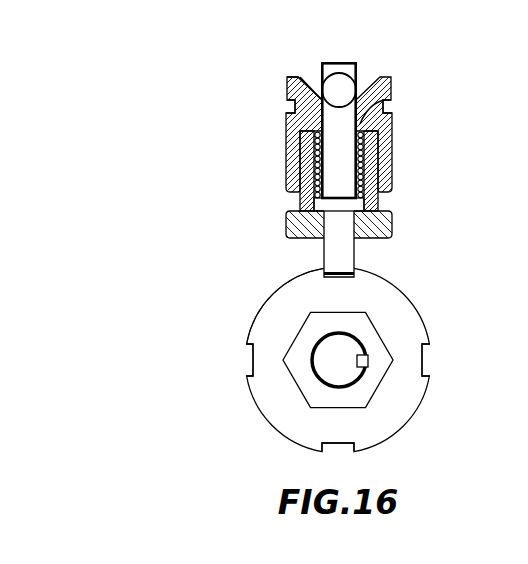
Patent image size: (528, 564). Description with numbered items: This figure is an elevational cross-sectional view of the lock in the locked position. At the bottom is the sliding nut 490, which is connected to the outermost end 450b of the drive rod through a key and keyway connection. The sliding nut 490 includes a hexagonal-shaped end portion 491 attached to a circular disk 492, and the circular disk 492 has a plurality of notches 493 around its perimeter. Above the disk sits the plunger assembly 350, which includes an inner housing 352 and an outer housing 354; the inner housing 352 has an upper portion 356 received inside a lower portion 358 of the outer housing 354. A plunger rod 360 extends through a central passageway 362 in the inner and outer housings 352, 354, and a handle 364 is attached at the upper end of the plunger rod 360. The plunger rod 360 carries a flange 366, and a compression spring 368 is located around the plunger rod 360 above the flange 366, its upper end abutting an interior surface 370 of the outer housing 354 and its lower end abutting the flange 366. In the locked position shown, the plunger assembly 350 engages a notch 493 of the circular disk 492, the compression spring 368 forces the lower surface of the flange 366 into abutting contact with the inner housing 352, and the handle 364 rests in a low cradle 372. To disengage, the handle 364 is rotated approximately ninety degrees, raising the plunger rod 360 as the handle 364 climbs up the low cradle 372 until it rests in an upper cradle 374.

The plunger assembly 350 is at (190, 86).
The inner housing 352 is at (393, 217).
The outer housing 354 is at (392, 137).
The upper portion 356 is at (305, 143).
The lower portion 358 is at (290, 170).
The plunger rod 360 is at (352, 62).
The central passageway 362 is at (300, 107).
The handle 364 is at (349, 85).
The flange 366 is at (322, 207).
The compression spring 368 is at (372, 168).
The interior surface 370 is at (387, 108).
The low cradle 372 is at (316, 97).
The upper cradle 374 is at (293, 78).
The sliding nut 490 is at (268, 408).
The hexagonal-shaped end portion 491 is at (292, 378).
The circular disk 492 is at (283, 285).
The notches 493 is at (423, 364).
The outermost end of the drive rod 450b is at (318, 358).